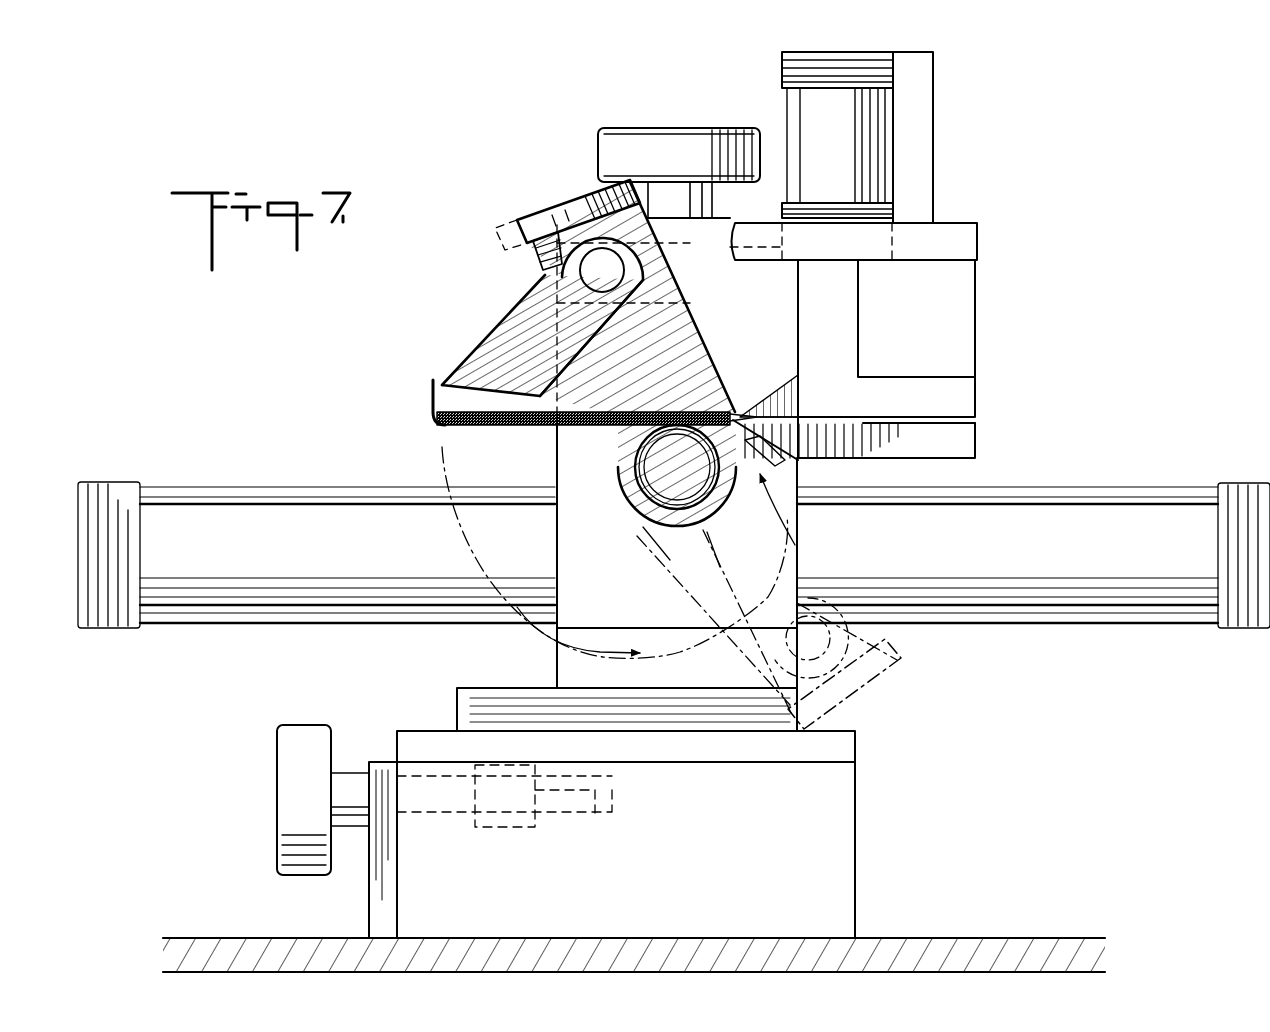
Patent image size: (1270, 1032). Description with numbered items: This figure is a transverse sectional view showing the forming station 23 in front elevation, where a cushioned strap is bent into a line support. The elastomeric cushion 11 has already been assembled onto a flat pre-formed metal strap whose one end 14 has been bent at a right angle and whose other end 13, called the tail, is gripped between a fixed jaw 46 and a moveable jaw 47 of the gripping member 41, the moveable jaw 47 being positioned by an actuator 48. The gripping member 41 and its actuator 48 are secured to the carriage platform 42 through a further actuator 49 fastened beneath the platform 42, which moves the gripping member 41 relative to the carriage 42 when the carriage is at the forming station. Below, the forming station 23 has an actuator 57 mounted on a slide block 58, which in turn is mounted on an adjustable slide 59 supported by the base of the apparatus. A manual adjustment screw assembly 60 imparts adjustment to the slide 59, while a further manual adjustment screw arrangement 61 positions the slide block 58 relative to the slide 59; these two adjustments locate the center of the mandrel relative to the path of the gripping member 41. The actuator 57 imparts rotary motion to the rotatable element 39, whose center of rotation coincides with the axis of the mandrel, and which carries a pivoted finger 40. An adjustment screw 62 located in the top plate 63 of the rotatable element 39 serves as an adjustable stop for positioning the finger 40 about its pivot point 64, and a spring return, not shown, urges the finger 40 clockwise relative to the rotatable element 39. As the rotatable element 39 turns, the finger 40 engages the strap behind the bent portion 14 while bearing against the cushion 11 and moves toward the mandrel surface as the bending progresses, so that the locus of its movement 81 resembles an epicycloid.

The elastomeric cushion 11 is at (505, 428).
The strap end 13 is at (766, 410).
The strap end 14 is at (432, 382).
The forming station 23 is at (250, 350).
The rotatable element 39 is at (692, 357).
The pivoted finger 40 is at (490, 356).
The gripping member 41 is at (992, 418).
The carriage platform 42 is at (968, 223).
The fixed jaw 46 is at (790, 388).
The moveable jaw 47 is at (902, 448).
The actuator 48 is at (865, 158).
The actuator 49 is at (960, 324).
The actuator 57 is at (228, 520).
The slide block 58 is at (572, 530).
The adjustable slide 59 is at (457, 690).
The manual adjustment screw assembly 60 is at (287, 778).
The manual adjustment screw arrangement 61 is at (636, 128).
The adjustment screw 62 is at (545, 256).
The top plate 63 is at (562, 206).
The pivot point 64 is at (640, 270).
The locus of movement 81 is at (547, 630).